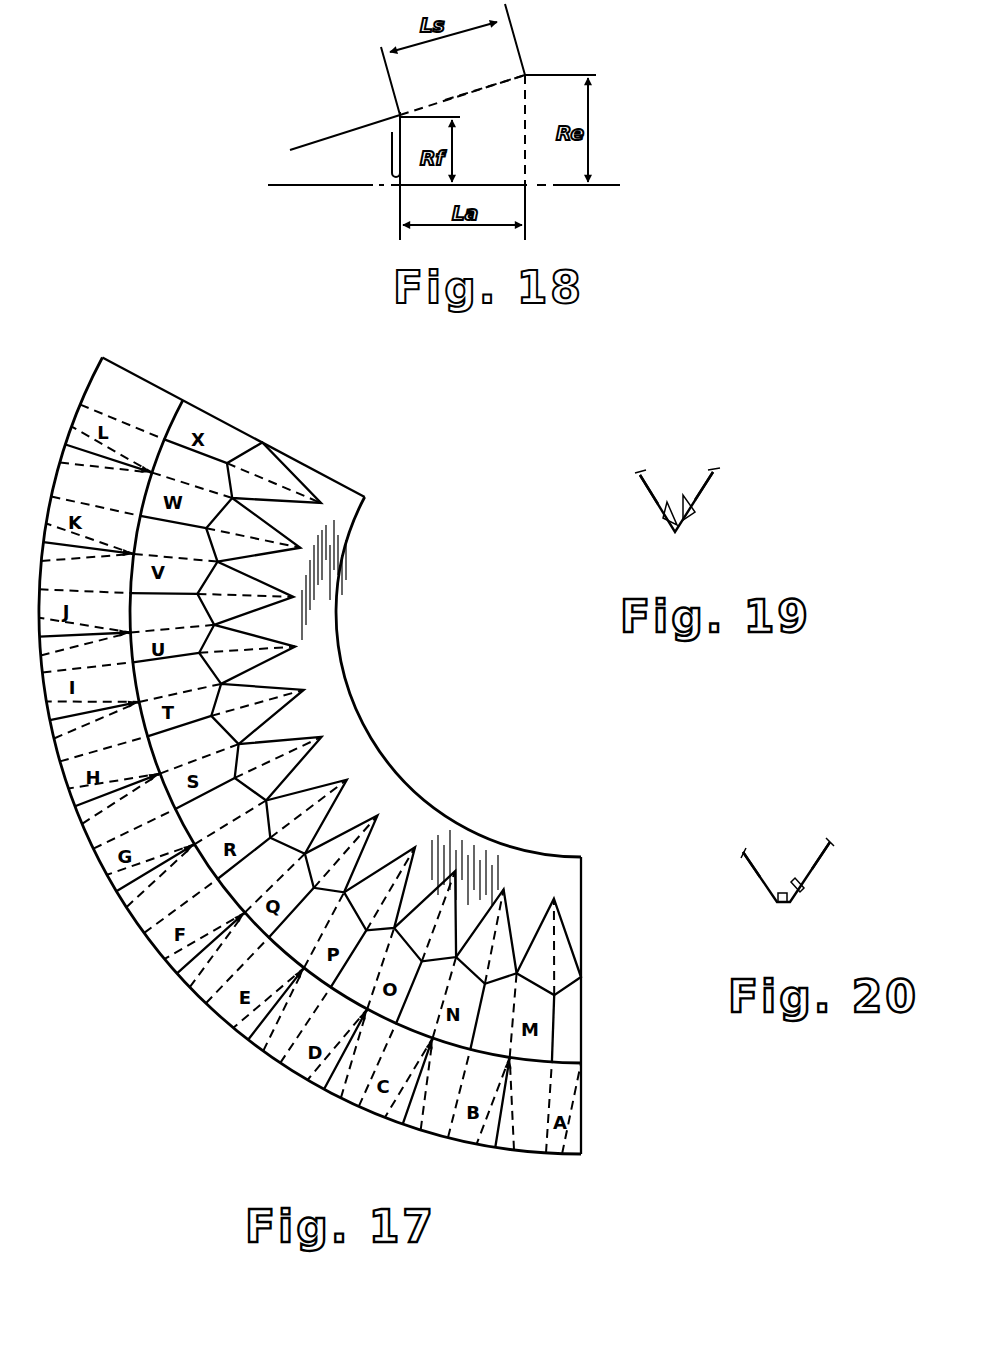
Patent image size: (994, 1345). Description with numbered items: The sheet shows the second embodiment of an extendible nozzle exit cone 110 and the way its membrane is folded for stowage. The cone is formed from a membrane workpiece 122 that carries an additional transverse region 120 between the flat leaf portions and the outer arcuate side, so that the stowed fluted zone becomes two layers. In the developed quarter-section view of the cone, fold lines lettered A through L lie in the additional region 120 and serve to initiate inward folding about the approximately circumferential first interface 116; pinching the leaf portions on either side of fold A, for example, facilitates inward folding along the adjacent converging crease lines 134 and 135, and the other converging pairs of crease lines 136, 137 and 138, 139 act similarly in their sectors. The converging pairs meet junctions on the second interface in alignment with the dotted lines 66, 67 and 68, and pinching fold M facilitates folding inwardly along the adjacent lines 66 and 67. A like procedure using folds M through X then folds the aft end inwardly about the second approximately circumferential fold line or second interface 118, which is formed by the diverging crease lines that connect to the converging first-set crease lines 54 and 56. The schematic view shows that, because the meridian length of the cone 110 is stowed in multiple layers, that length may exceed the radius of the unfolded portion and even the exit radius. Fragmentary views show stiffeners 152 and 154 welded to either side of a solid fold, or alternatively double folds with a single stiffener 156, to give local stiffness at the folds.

In FIG. 18, the extendible exit cone 110 is at (462, 96).
In FIG. 17, the first interface 116 is at (137, 732).
In FIG. 17, the second interface 118 is at (218, 679).
In FIG. 17, the additional transverse region 120 is at (137, 402).
In FIG. 17, the workpiece 122 is at (446, 798).
In FIG. 17, the crease line 134 is at (117, 380).
In FIG. 17, the crease line 135 is at (573, 1135).
In FIG. 17, the crease line 136 is at (515, 1103).
In FIG. 17, the crease line 137 is at (445, 1084).
In FIG. 17, the crease line 138 is at (386, 1053).
In FIG. 17, the crease line 139 is at (327, 1014).
In FIG. 17, the dotted line 66 is at (585, 1037).
In FIG. 17, the dotted line 67 is at (511, 990).
In FIG. 17, the dotted line 68 is at (448, 977).
In FIG. 19, the crease line 54 is at (641, 477).
In FIG. 20, the crease line 54 is at (753, 862).
In FIG. 19, the crease line 56 is at (709, 488).
In FIG. 20, the crease line 56 is at (820, 855).
In FIG. 19, the stiffener 152 is at (665, 510).
In FIG. 19, the stiffener 154 is at (697, 501).
In FIG. 20, the stiffener 156 is at (799, 888).